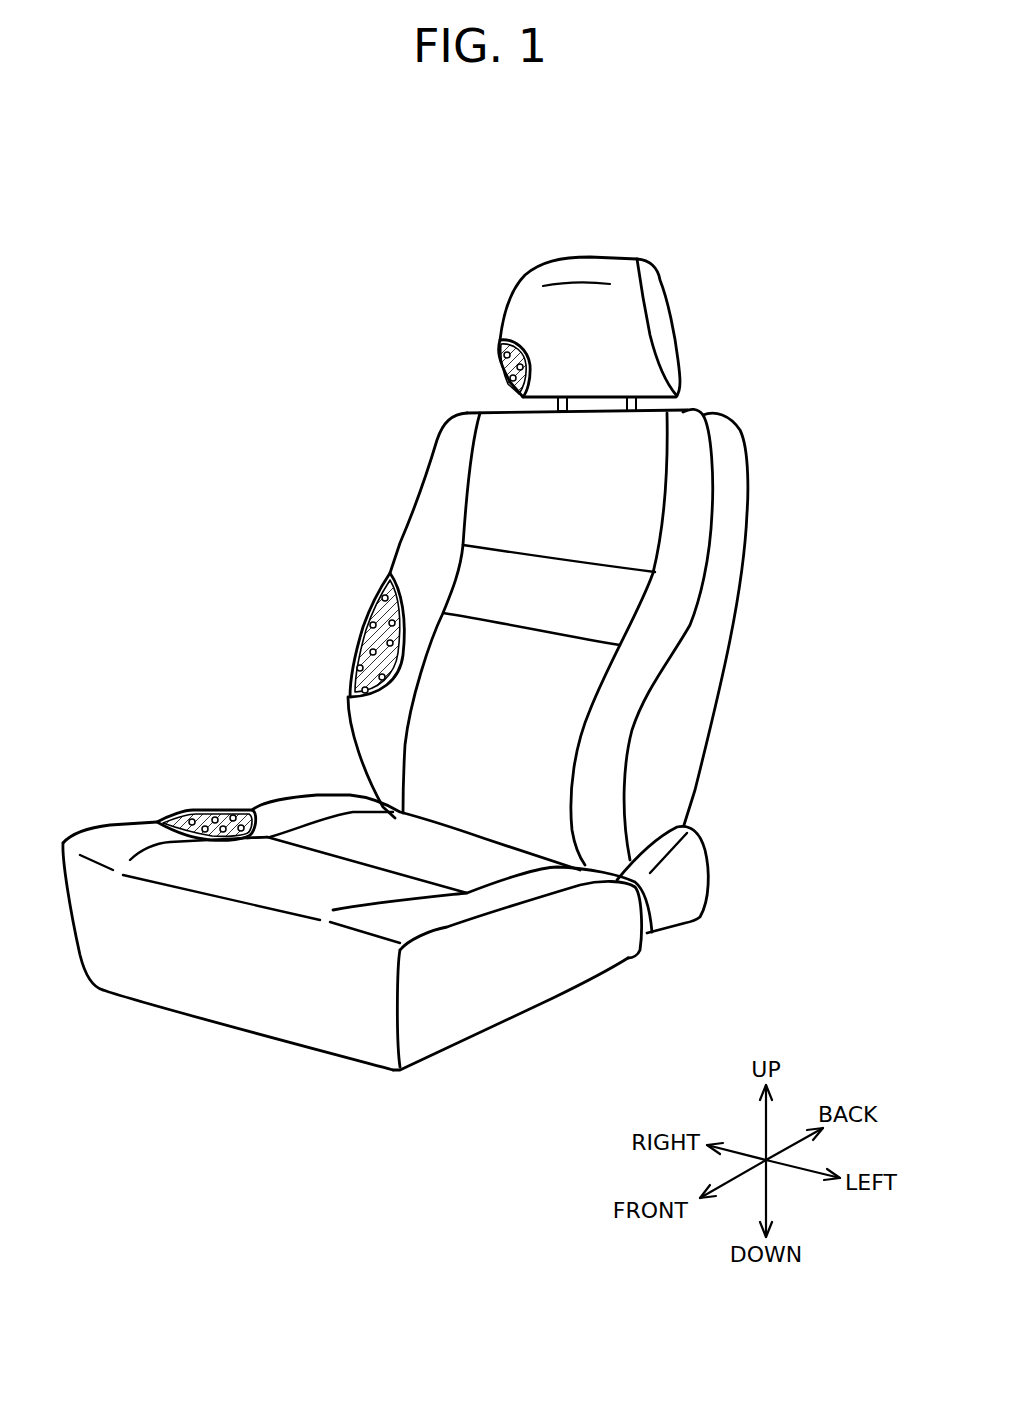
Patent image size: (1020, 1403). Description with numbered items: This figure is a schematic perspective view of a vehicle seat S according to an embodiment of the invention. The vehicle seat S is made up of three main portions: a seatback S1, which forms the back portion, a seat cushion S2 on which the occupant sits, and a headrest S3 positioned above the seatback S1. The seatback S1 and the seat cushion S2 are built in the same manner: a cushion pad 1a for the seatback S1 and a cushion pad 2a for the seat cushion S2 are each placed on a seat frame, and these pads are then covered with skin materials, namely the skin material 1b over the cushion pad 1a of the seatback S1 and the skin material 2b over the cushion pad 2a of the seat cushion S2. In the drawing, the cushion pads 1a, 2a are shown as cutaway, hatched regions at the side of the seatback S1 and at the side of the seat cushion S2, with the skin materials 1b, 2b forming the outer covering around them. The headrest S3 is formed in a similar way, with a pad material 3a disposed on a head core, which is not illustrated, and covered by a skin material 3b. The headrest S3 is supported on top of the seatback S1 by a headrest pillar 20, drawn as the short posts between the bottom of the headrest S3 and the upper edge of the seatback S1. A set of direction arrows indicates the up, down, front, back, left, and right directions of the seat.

The vehicle seat S is at (195, 160).
The seatback S1 is at (388, 498).
The seat cushion S2 is at (257, 753).
The headrest S3 is at (498, 278).
The cushion pad 1a is at (370, 640).
The skin material 1b is at (390, 570).
The cushion pad 2a is at (197, 815).
The skin material 2b is at (253, 827).
The pad material 3a is at (507, 365).
The skin material 3b is at (500, 342).
The headrest pillar 20 is at (640, 403).